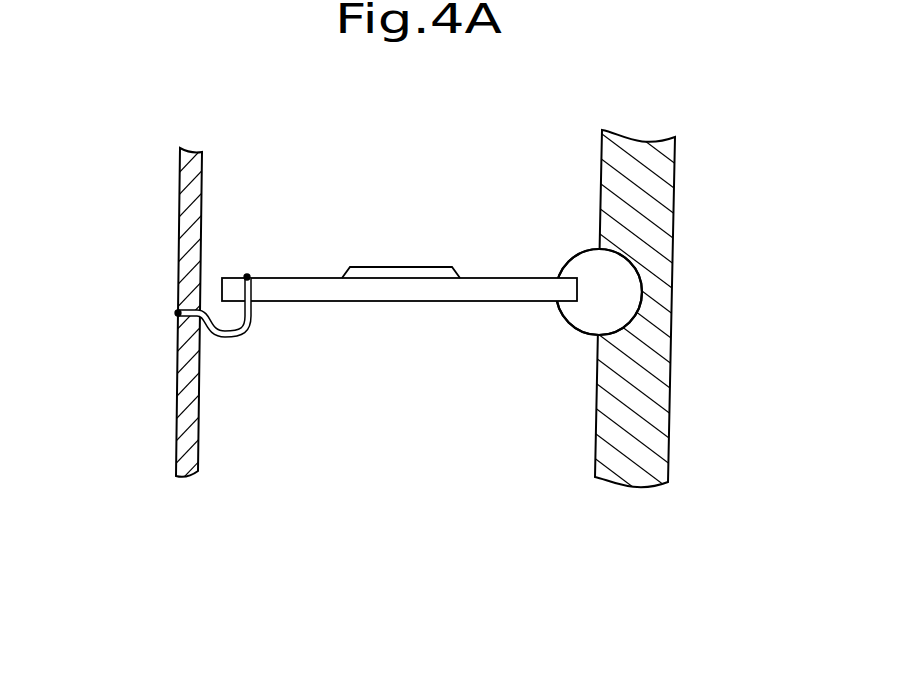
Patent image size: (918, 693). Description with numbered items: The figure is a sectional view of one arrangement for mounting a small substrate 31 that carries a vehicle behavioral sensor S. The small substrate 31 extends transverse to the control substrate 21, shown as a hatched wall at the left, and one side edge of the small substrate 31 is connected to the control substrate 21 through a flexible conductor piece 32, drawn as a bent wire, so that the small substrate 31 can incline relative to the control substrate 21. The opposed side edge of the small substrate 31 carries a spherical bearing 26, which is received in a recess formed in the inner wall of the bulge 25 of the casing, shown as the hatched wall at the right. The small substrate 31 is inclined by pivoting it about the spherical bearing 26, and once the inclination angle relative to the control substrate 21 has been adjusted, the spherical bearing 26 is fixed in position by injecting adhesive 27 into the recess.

The control substrate 21 is at (182, 263).
The bulge 25 is at (640, 420).
The spherical bearing 26 is at (637, 293).
The adhesive 27 is at (630, 253).
The small substrate 31 is at (410, 292).
The flexible conductor piece 32 is at (238, 331).
The vehicle behavioral sensor S is at (402, 269).